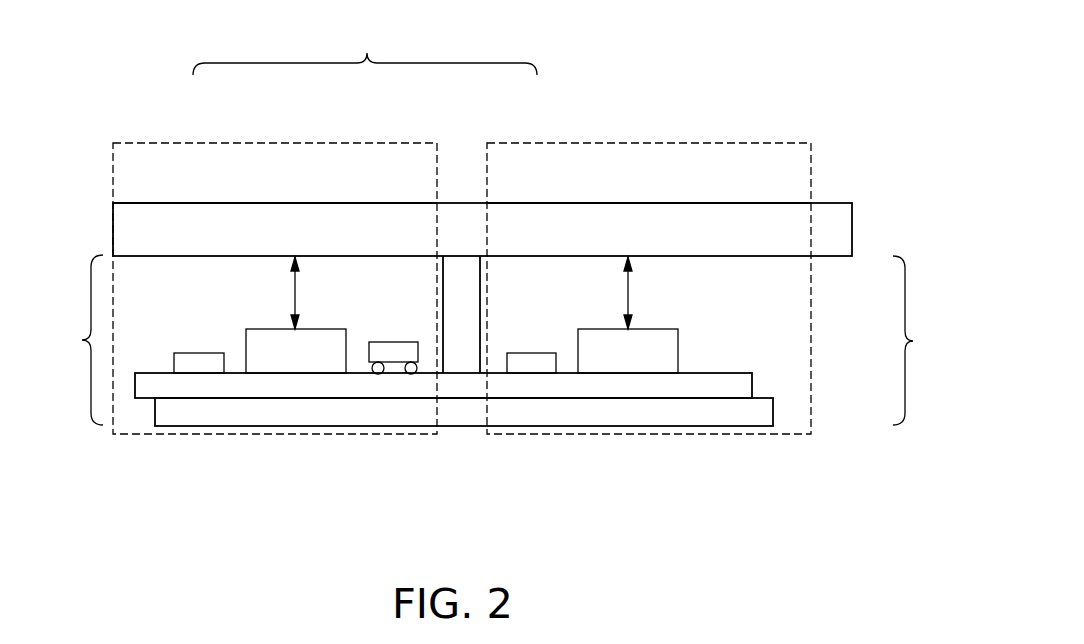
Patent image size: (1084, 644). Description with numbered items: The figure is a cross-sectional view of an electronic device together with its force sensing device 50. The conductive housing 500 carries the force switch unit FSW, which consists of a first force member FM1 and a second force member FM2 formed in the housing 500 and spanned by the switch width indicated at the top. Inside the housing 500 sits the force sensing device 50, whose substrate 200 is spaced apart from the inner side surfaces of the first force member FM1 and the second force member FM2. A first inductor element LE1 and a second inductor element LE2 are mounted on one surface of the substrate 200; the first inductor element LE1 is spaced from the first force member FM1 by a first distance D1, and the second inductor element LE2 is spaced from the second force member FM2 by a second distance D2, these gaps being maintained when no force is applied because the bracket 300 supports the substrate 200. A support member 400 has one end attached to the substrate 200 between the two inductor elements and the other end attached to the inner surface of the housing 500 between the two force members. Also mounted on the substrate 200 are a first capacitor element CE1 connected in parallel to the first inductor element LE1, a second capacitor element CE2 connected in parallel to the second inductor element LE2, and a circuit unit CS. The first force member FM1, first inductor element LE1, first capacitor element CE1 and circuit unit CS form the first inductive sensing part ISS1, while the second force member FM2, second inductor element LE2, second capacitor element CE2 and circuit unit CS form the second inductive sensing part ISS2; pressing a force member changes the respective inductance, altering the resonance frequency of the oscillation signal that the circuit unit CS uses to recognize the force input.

The force switch unit FSW is at (365, 51).
The first force member FM1 is at (196, 226).
The second force member FM2 is at (537, 226).
The conductive housing 500 is at (468, 216).
The force sensing device 50 is at (499, 340).
The support member 400 is at (461, 358).
The substrate 200 is at (729, 370).
The bracket 300 is at (778, 415).
The first capacitor element CE1 is at (197, 364).
The first inductor element LE1 is at (272, 358).
The circuit unit CS is at (400, 350).
The second capacitor element CE2 is at (524, 364).
The second inductor element LE2 is at (630, 364).
The first distance D1 is at (311, 293).
The second distance D2 is at (644, 293).
The first inductive sensing part ISS1 is at (252, 336).
The second inductive sensing part ISS2 is at (702, 336).